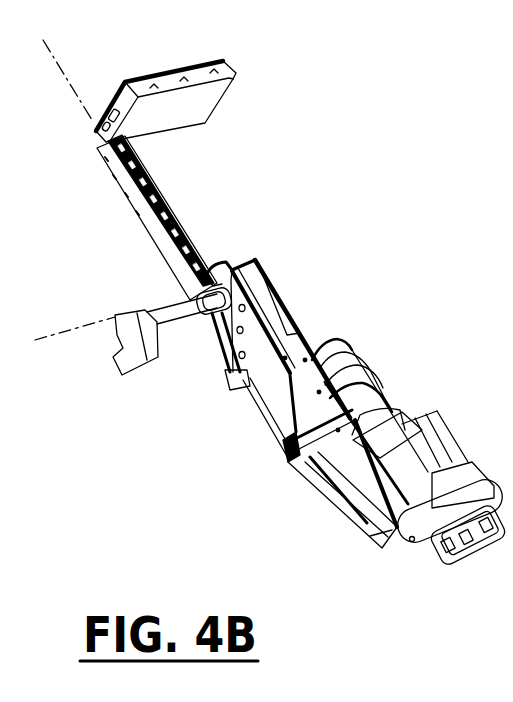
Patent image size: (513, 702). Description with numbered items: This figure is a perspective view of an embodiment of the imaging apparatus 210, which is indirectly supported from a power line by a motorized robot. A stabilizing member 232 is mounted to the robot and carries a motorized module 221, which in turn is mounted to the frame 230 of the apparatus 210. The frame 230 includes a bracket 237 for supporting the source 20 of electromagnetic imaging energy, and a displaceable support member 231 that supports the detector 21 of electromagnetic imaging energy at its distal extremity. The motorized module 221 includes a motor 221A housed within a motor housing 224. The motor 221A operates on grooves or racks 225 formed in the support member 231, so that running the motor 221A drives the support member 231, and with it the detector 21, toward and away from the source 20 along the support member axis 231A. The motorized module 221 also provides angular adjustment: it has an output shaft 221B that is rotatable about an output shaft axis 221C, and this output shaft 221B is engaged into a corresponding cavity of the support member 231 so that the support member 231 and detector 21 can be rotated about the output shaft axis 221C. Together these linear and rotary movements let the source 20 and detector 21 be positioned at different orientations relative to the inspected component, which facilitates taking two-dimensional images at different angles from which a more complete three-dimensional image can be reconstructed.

The source 20 is at (397, 408).
The detector 21 is at (193, 76).
The apparatus 210 is at (329, 322).
The motorized module 221 is at (256, 437).
The motor 221A is at (212, 262).
The output shaft 221B is at (163, 303).
The output shaft axis 221C is at (70, 332).
The motor housing 224 is at (272, 288).
The racks 225 is at (152, 188).
The frame 230 is at (351, 525).
The support member 231 is at (170, 207).
The support member axis 231A is at (68, 78).
The stabilizing member 232 is at (191, 437).
The bracket 237 is at (381, 549).